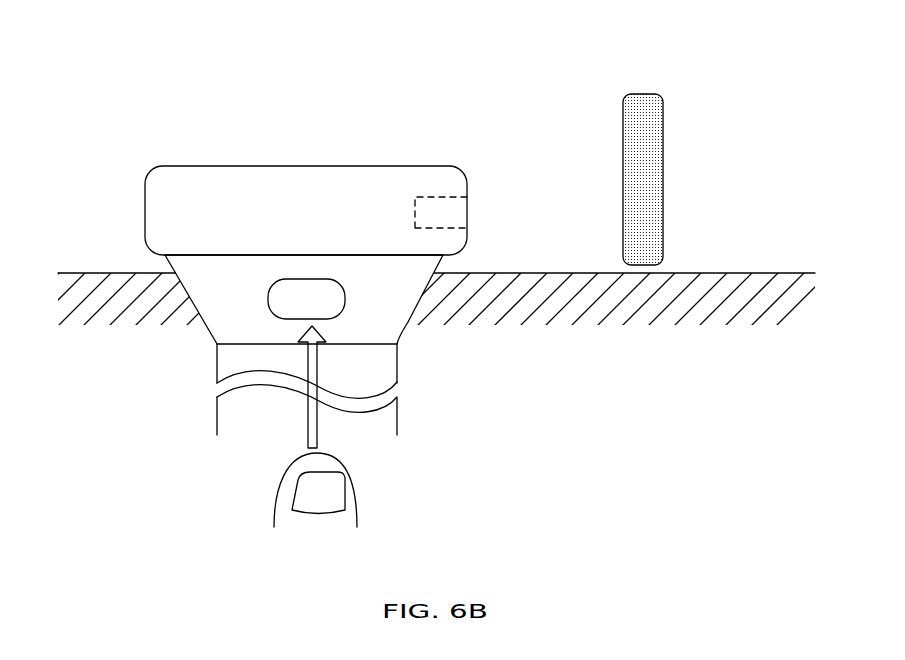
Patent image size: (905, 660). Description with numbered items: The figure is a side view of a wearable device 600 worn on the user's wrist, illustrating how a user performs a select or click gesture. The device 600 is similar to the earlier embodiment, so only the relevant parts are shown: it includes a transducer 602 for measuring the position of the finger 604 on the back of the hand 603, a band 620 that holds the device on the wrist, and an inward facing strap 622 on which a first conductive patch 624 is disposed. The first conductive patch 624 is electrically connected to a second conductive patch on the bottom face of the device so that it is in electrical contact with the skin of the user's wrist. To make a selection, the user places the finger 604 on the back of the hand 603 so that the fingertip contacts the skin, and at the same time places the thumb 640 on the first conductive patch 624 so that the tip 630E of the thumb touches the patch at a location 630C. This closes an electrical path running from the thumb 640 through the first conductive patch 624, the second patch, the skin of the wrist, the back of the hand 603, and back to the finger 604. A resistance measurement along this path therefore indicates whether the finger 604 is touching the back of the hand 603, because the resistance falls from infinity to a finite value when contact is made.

The wearable device 600 is at (198, 179).
The transducer 602 is at (427, 203).
The hand 603 is at (732, 272).
The finger 604 is at (648, 102).
The band 620 is at (392, 418).
The inward facing strap 622 is at (231, 319).
The first conductive patch 624 is at (330, 287).
The location of thumb tip contact 630C is at (298, 305).
The tip of the thumb 630E is at (300, 460).
The thumb 640 is at (358, 517).